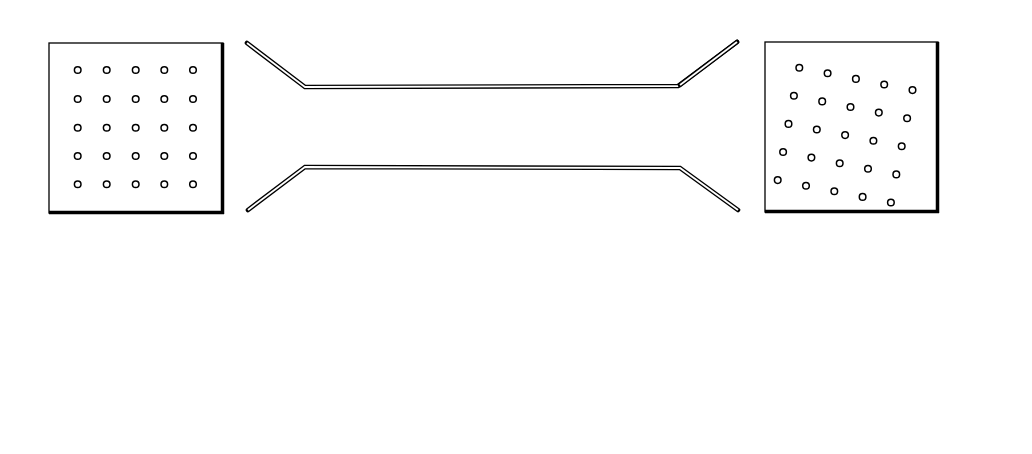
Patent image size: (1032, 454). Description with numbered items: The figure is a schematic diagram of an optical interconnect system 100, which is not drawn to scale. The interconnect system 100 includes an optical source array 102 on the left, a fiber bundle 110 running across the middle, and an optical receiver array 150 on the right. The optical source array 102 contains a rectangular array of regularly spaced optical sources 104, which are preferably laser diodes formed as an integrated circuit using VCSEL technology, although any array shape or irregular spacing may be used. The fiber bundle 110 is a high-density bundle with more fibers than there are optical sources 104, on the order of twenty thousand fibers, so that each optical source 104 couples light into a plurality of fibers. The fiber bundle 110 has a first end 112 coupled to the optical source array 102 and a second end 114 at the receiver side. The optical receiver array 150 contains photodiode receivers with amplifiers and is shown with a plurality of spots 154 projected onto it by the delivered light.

The optical interconnect system 100 is at (336, 283).
The optical source array 102 is at (78, 216).
The optical sources 104 is at (196, 100).
The fiber bundle 110 is at (493, 171).
The first end 112 is at (282, 62).
The second end 114 is at (704, 60).
The optical receiver array 150 is at (795, 215).
The spots 154 is at (780, 152).